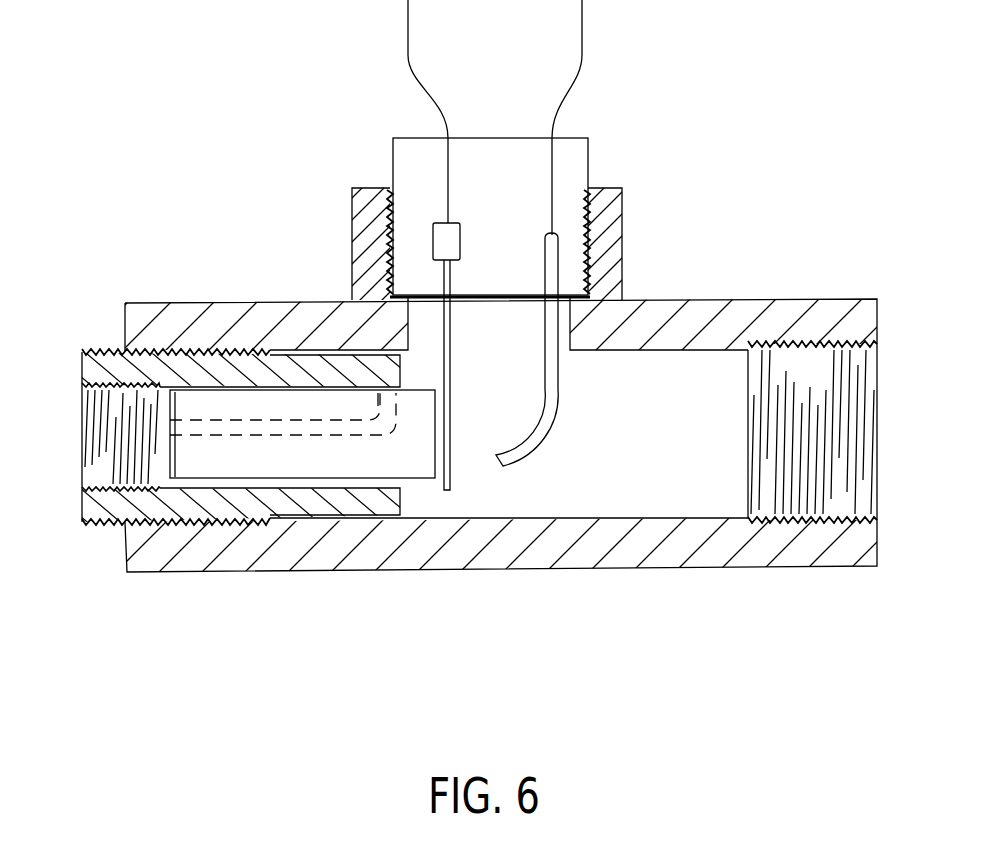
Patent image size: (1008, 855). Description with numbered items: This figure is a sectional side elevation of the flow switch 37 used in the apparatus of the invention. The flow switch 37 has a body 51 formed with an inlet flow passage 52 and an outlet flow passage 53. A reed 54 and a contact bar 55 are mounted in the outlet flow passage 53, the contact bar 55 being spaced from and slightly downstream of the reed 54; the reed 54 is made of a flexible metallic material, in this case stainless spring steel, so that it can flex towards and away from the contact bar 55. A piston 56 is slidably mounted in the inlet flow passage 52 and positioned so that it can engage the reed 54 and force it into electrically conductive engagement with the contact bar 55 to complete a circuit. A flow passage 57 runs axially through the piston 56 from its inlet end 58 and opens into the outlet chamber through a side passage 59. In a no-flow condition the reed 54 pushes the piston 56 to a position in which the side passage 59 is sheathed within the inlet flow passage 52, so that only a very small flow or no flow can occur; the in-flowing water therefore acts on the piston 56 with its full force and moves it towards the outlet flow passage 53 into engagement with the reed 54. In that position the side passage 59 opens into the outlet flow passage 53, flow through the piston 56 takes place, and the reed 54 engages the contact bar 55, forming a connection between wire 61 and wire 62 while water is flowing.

The flow switch 37 is at (650, 197).
The body 51 is at (265, 303).
The inlet flow passage 52 is at (90, 468).
The outlet flow passage 53 is at (695, 478).
The reed 54 is at (452, 453).
The contact bar 55 is at (535, 443).
The piston 56 is at (192, 462).
The flow passage 57 is at (203, 422).
The inlet end 58 is at (160, 423).
The side passage 59 is at (383, 405).
The wire 61 is at (405, 60).
The wire 62 is at (585, 62).